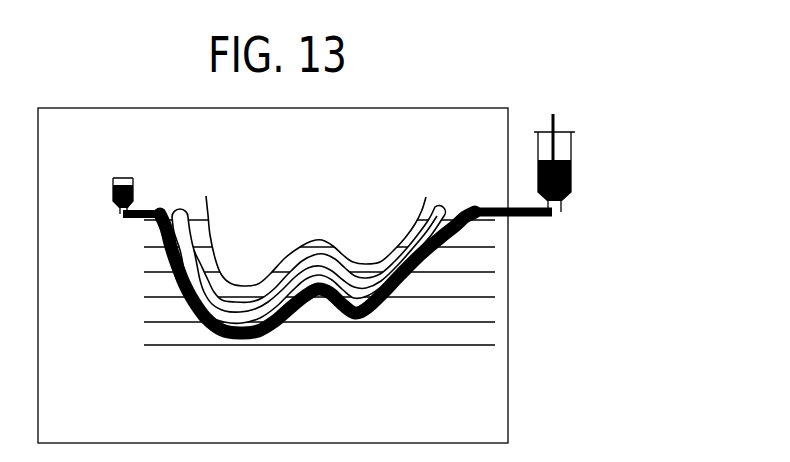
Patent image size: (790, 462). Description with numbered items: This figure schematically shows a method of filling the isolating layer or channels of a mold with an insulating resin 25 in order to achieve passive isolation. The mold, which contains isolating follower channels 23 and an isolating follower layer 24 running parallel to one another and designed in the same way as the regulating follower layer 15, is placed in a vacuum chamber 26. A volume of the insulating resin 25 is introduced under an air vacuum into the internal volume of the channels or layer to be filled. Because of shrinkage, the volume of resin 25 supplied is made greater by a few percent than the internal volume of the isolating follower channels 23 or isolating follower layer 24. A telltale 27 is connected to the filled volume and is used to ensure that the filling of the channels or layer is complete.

The regulating follower layer 15 is at (424, 200).
The isolating follower channels 23 is at (453, 262).
The isolating follower layer 24 is at (453, 262).
The insulating resin 25 is at (568, 172).
The vacuum chamber 26 is at (482, 418).
The telltale 27 is at (120, 178).